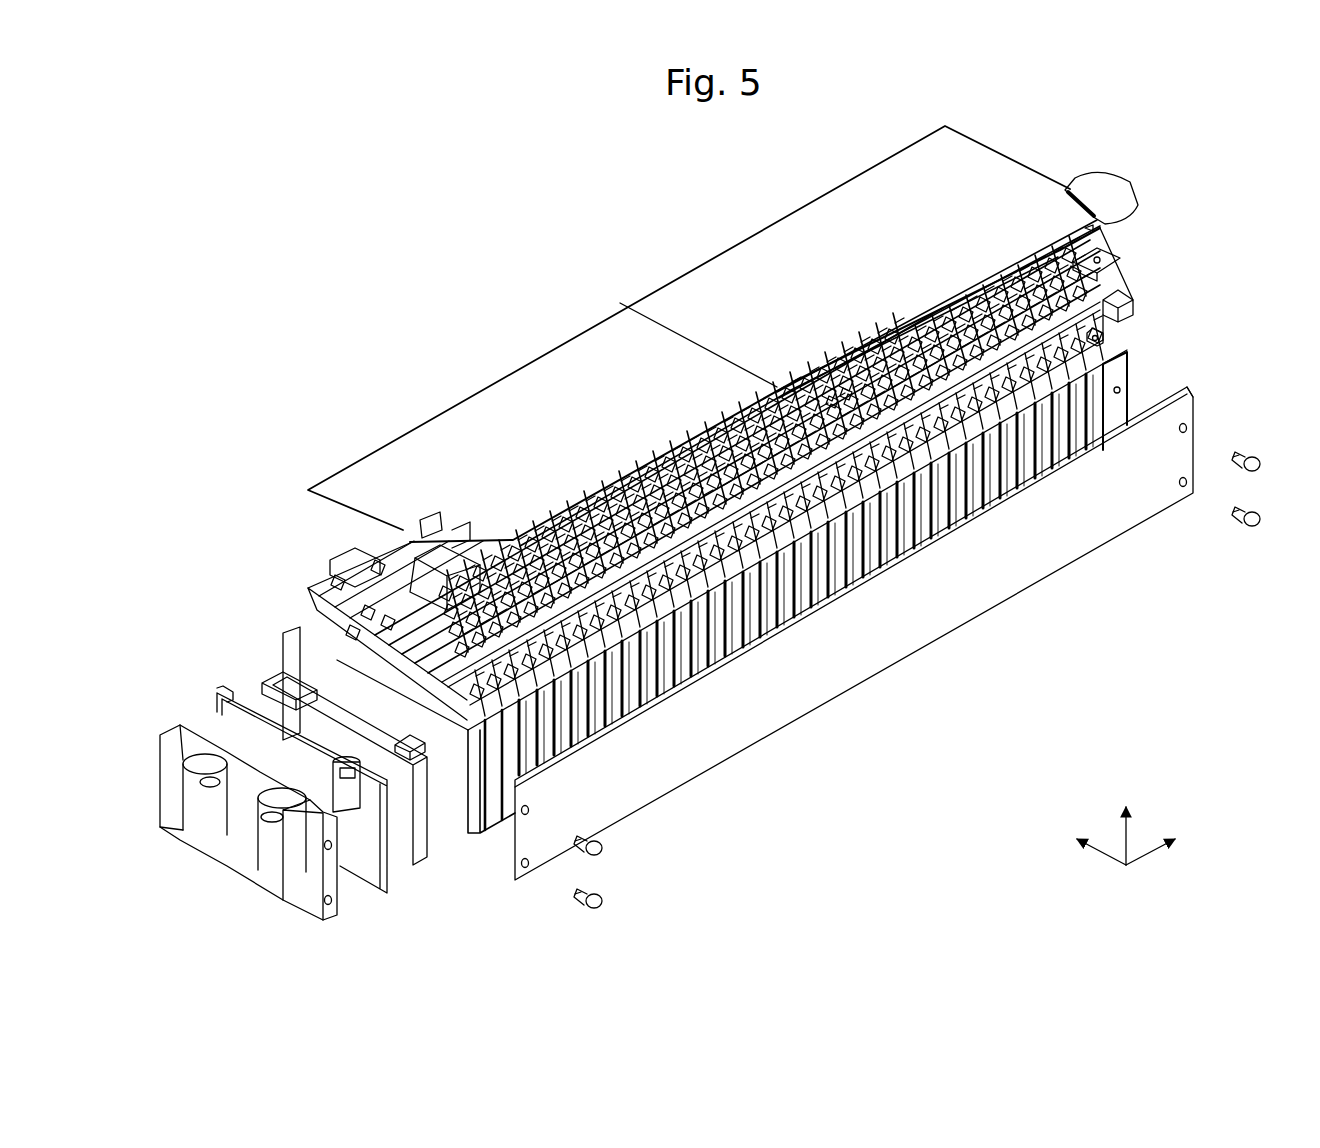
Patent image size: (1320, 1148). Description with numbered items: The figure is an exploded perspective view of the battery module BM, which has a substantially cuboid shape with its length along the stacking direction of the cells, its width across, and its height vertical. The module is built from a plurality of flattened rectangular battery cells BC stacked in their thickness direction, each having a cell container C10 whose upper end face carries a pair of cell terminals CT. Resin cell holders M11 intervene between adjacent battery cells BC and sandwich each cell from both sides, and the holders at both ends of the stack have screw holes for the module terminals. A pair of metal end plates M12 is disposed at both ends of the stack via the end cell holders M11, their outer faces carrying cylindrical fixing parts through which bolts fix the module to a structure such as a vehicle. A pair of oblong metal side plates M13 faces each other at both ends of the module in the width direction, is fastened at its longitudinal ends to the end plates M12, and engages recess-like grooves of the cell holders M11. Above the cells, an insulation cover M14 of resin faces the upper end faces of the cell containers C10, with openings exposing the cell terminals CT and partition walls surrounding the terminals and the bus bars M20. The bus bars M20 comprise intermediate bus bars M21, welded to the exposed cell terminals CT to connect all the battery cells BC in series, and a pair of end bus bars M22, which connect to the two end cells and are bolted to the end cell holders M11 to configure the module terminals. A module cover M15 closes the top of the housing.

The battery module BM is at (316, 259).
The module cover M15 is at (567, 367).
The insulation cover M14 is at (397, 567).
The bus bars M20 is at (754, 472).
The intermediate bus bar M21 is at (850, 395).
The end bus bar M22 is at (1125, 249).
The cell terminal CT is at (282, 666).
The battery cell BC is at (258, 668).
The cell container C10 is at (257, 700).
The end plate M12 is at (163, 727).
The side plate M13 is at (297, 645).
The cell holder M11 is at (1107, 413).